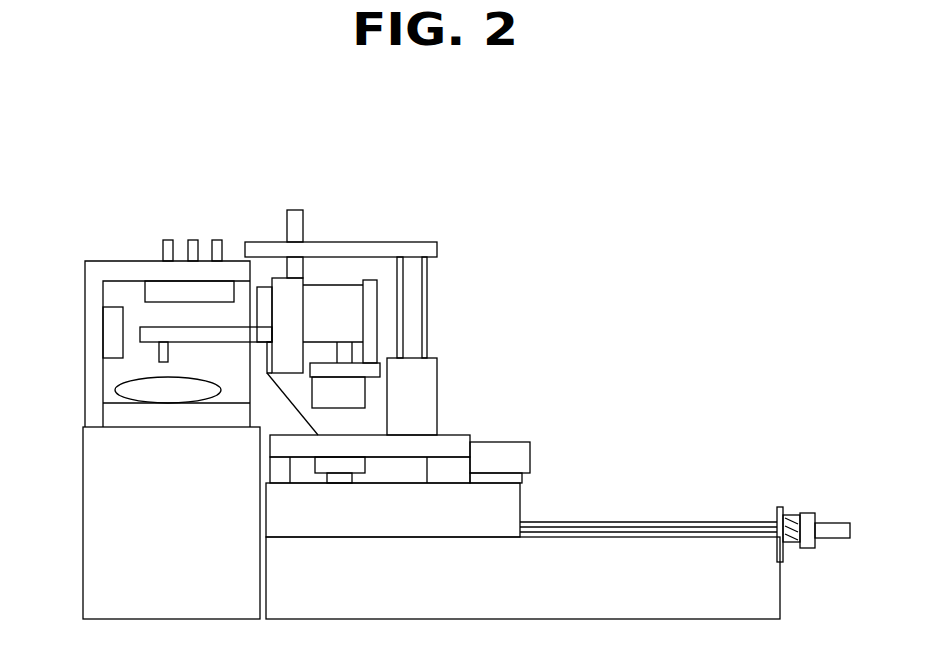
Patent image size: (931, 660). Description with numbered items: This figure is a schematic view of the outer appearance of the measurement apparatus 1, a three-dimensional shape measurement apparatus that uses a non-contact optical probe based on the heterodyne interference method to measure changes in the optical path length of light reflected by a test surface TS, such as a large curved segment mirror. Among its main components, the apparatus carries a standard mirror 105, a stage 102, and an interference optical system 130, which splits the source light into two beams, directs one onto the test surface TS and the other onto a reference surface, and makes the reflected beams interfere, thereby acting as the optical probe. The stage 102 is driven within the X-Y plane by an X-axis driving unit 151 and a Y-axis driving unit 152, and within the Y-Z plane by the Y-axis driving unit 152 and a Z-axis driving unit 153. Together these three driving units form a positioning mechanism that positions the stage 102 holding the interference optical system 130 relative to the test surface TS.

The measurement apparatus 1 is at (447, 167).
The standard mirror 105 is at (205, 293).
The stage 102 is at (162, 333).
The interference optical system 130 is at (162, 364).
The test surface TS is at (153, 396).
The Z-axis driving unit 153 is at (297, 318).
The X-axis driving unit 151 is at (340, 465).
The Y-axis driving unit 152 is at (641, 522).